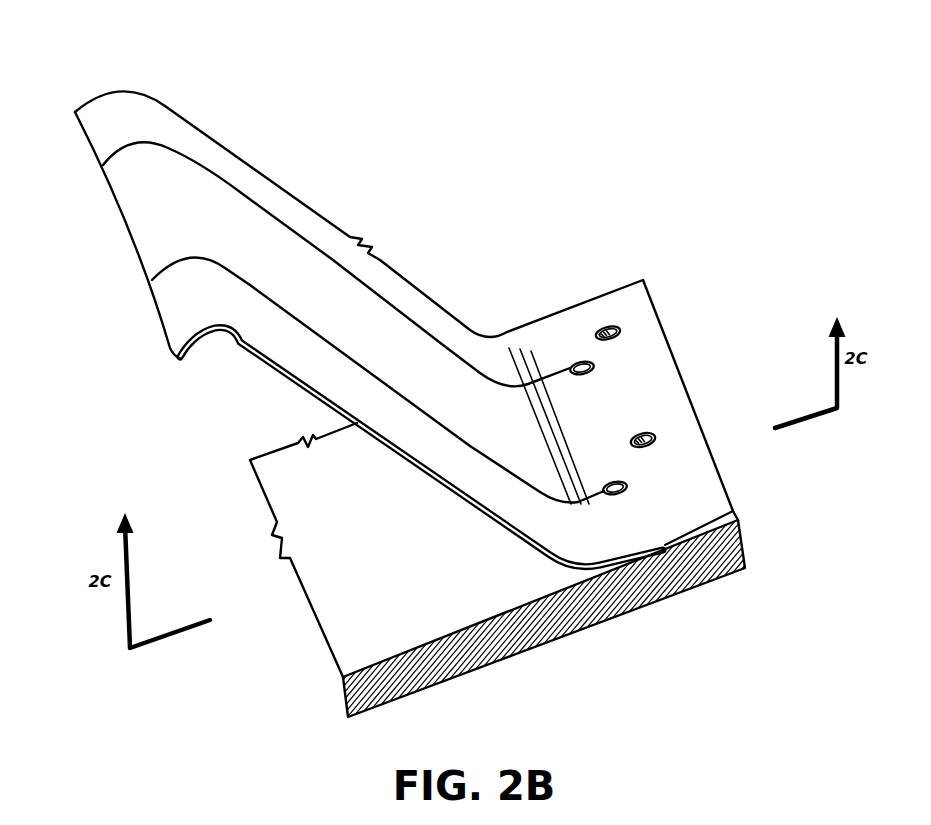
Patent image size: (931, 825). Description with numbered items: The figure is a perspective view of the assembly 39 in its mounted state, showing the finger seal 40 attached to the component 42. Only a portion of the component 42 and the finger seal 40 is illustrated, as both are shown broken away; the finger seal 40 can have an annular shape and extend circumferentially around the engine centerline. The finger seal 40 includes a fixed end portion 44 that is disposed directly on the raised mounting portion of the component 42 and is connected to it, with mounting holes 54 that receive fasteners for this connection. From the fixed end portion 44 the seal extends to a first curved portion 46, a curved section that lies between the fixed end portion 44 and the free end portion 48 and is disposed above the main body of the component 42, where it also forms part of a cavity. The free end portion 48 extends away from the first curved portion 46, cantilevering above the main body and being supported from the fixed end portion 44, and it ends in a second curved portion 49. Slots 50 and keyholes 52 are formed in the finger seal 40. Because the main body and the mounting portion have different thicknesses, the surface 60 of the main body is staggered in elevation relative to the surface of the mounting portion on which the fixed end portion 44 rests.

The exploded assembly 39 is at (58, 97).
The finger seal 40 is at (507, 183).
The component 42 is at (570, 637).
The fixed end portion 44 is at (640, 387).
The first curved portion 46 is at (519, 349).
The free end portion 48 is at (300, 263).
The second curved portion 49 is at (200, 297).
The slots 50 is at (447, 345).
The keyholes 52 is at (594, 366).
The mounting holes 54 is at (608, 325).
The surface 60 is at (348, 618).